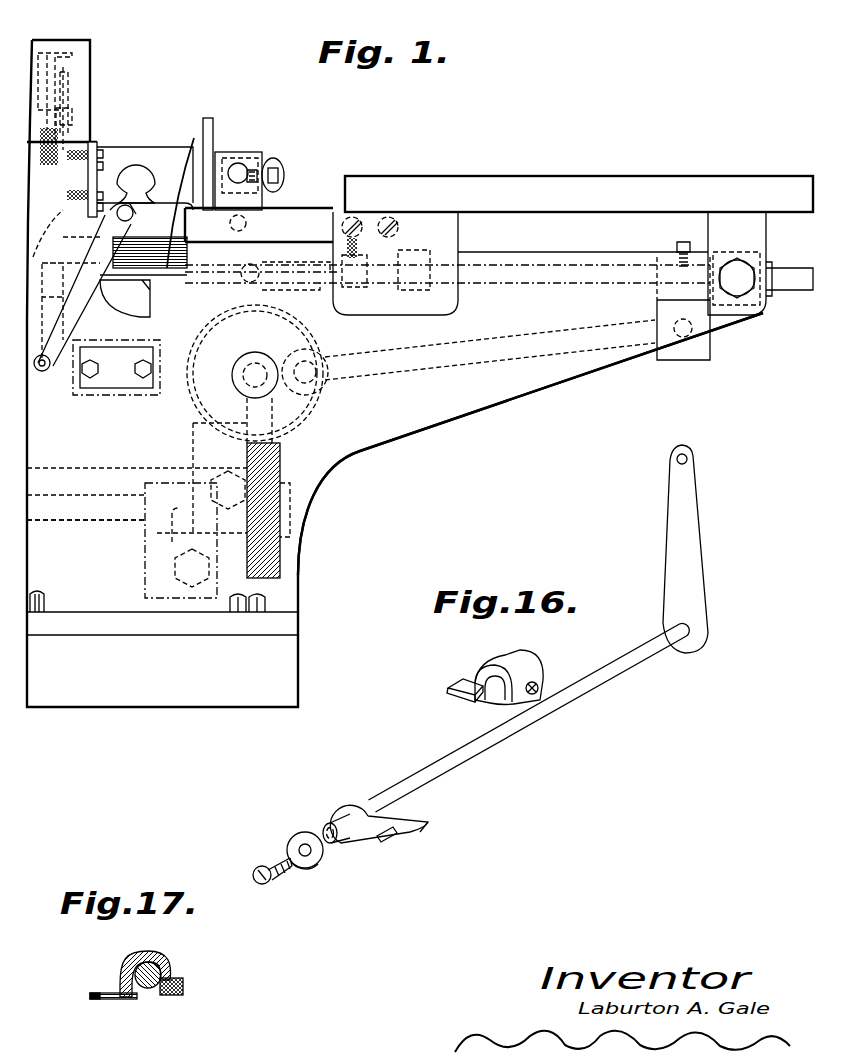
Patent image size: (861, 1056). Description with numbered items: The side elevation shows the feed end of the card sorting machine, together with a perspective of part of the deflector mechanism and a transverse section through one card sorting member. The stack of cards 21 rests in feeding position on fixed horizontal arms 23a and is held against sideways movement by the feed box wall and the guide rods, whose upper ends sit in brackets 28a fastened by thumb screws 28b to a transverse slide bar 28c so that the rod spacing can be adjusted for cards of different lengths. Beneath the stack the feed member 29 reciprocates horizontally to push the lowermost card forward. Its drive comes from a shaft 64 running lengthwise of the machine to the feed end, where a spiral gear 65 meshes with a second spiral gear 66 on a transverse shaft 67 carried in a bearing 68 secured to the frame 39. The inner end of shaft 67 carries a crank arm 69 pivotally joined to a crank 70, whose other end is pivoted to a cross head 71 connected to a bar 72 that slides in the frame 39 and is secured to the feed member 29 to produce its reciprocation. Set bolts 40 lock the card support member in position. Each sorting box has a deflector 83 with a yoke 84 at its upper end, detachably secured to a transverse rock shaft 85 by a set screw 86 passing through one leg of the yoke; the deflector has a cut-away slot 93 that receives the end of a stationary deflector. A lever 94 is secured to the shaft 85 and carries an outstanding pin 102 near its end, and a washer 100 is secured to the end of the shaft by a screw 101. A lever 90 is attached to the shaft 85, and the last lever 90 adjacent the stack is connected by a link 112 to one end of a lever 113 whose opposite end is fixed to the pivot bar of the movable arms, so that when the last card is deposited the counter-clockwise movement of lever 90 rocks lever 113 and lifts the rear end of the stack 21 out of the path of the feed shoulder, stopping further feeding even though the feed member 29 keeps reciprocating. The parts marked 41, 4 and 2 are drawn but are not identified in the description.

In FIG. 1, the post 41 is at (50, 40).
In FIG. 1, the rod 4 is at (63, 78).
In FIG. 1, the frame member 2 is at (62, 112).
In FIG. 1, the feed member 29 is at (102, 174).
In FIG. 1, the horizontal arms 23a is at (197, 144).
In FIG. 1, the transverse slide bar 28c is at (238, 164).
In FIG. 1, the brackets 28a is at (250, 165).
In FIG. 1, the thumb screws 28b is at (290, 170).
In FIG. 1, the bar 72 is at (790, 290).
In FIG. 1, the cross head 71 is at (712, 352).
In FIG. 1, the crank 70 is at (430, 368).
In FIG. 1, the frames 39 is at (310, 484).
In FIG. 1, the second spiral gear 66 is at (284, 312).
In FIG. 1, the transverse shaft 67 is at (250, 377).
In FIG. 1, the crank arm 69 is at (290, 396).
In FIG. 1, the spiral gear 65 is at (282, 568).
In FIG. 1, the bearing 68 is at (148, 565).
In FIG. 1, the shaft 64 is at (100, 522).
In FIG. 1, the set bolts 40 is at (146, 386).
In FIG. 1, the stack of cards 21 is at (148, 258).
In FIG. 1, the link 112 is at (133, 212).
In FIG. 1, the lever 113 is at (72, 303).
In FIG. 16, the lever 90 is at (690, 541).
In FIG. 16, the transverse rock shaft 85 is at (594, 688).
In FIG. 17, the transverse rock shaft 85 is at (152, 990).
In FIG. 16, the lever 94 is at (412, 836).
In FIG. 16, the outstanding pin 102 is at (386, 846).
In FIG. 16, the washer 100 is at (292, 842).
In FIG. 16, the screw 101 is at (290, 870).
In FIG. 16, the yoke 84 is at (530, 662).
In FIG. 17, the yoke 84 is at (170, 962).
In FIG. 16, the deflector 83 is at (462, 690).
In FIG. 17, the deflector 83 is at (114, 999).
In FIG. 17, the set screw 86 is at (183, 985).
In FIG. 17, the cut-away slot 93 is at (92, 999).